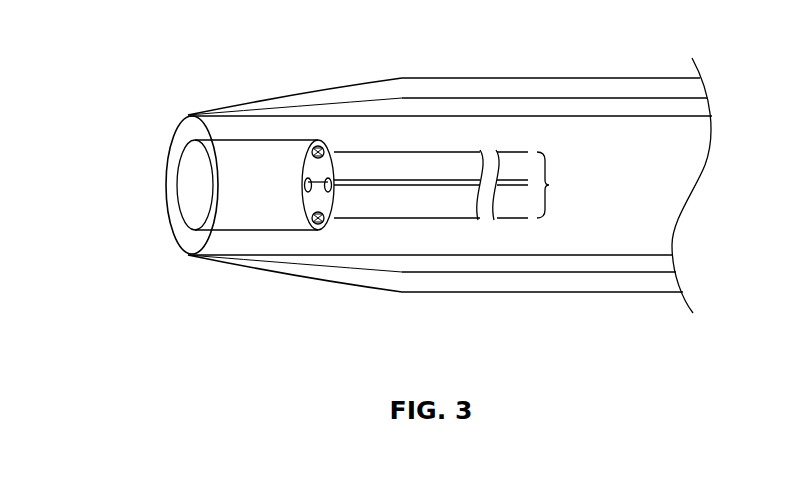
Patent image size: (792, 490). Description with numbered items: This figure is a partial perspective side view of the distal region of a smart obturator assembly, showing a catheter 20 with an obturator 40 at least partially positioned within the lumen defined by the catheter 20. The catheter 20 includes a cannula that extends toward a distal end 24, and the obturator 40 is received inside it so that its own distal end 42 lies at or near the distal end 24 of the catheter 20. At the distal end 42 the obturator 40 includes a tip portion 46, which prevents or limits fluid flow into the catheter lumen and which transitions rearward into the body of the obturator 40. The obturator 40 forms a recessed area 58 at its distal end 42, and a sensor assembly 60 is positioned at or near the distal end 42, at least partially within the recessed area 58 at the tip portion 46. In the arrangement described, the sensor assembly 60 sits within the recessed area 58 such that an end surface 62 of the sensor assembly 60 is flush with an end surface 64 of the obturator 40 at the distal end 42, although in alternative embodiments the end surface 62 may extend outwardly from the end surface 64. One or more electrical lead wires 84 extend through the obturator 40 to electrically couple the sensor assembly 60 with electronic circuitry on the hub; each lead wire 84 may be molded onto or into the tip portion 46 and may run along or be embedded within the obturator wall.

The catheter 20 is at (543, 97).
The distal end 24 is at (328, 293).
The obturator 40 is at (613, 152).
The distal end 42 is at (402, 115).
The tip portion 46 is at (198, 88).
The recessed area 58 is at (240, 231).
The sensor assembly 60 is at (201, 185).
The end surface 62 is at (188, 163).
The end surface 64 is at (192, 245).
The electrical lead wire 84 is at (444, 185).